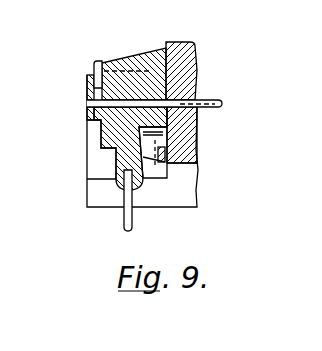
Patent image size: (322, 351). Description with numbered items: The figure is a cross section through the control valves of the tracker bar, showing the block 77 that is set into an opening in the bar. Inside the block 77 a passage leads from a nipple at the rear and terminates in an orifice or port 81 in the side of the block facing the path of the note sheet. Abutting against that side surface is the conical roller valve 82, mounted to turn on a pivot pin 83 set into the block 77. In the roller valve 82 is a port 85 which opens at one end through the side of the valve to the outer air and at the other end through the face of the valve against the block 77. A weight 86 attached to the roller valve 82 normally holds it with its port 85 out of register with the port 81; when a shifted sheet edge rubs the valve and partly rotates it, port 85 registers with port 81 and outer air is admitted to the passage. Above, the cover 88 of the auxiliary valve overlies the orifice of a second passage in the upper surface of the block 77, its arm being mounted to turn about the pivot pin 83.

The block 77 is at (196, 57).
The port 81 is at (201, 128).
The roller valve 82 is at (148, 50).
The pivot pin 83 is at (220, 103).
The port 85 is at (155, 150).
The weight 86 is at (123, 221).
The cover 88 is at (97, 60).